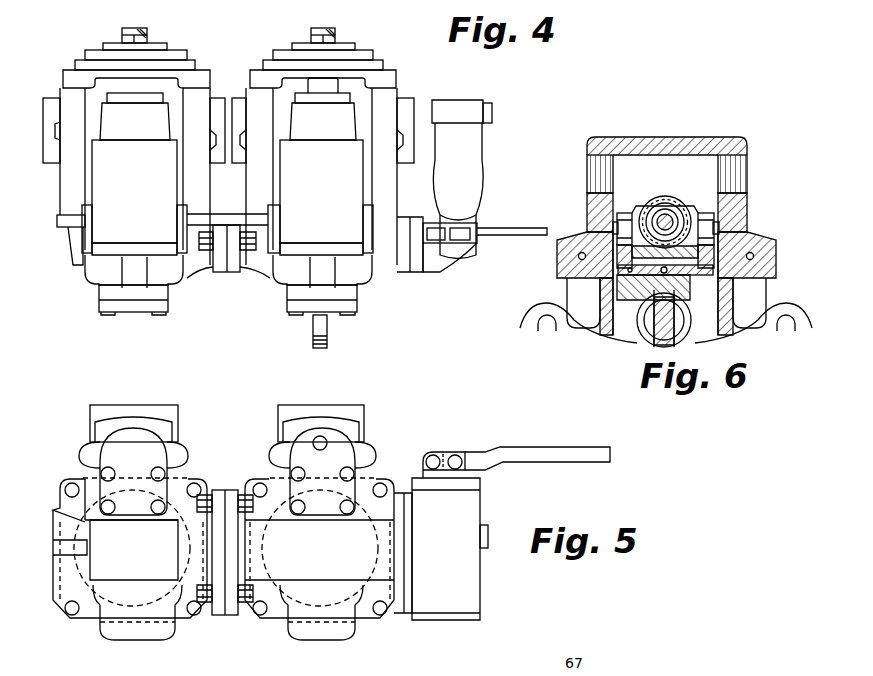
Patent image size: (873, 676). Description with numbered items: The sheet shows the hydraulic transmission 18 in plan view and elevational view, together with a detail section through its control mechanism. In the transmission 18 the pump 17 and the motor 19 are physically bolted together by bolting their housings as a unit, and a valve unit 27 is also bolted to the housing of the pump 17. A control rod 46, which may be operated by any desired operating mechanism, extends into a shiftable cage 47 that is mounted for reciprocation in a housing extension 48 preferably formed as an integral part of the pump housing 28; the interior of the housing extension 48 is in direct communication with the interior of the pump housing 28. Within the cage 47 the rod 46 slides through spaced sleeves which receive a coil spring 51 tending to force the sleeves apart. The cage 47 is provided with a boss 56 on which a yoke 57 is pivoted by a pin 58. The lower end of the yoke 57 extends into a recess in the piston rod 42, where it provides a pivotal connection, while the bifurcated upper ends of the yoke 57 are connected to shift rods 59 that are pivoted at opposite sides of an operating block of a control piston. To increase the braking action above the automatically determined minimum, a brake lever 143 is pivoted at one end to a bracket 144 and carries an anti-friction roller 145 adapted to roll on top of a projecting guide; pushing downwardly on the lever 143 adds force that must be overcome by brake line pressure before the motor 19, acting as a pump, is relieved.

In FIG. 4, the pump 17 is at (323, 171).
In FIG. 5, the pump 17 is at (319, 522).
In FIG. 4, the hydraulic transmission 18 is at (258, 278).
In FIG. 5, the hydraulic transmission 18 is at (265, 445).
In FIG. 4, the motor 19 is at (134, 171).
In FIG. 5, the motor 19 is at (130, 522).
In FIG. 4, the valve unit 27 is at (462, 179).
In FIG. 5, the valve unit 27 is at (441, 549).
In FIG. 6, the pump housing 28 is at (740, 325).
In FIG. 6, the piston rod 42 is at (650, 330).
In FIG. 4, the control rod 46 is at (327, 333).
In FIG. 6, the control rod 46 is at (676, 225).
In FIG. 6, the shiftable cage 47 is at (668, 208).
In FIG. 6, the housing extension 48 is at (727, 145).
In FIG. 6, the coil spring 51 is at (656, 210).
In FIG. 6, the boss 56 is at (710, 247).
In FIG. 6, the yoke 57 is at (703, 292).
In FIG. 6, the pin 58 is at (716, 270).
In FIG. 6, the shift rods 59 is at (627, 210).
In FIG. 5, the brake lever 143 is at (592, 455).
In FIG. 4, the bracket 144 is at (430, 236).
In FIG. 5, the bracket 144 is at (425, 478).
In FIG. 5, the anti-friction roller 145 is at (456, 460).